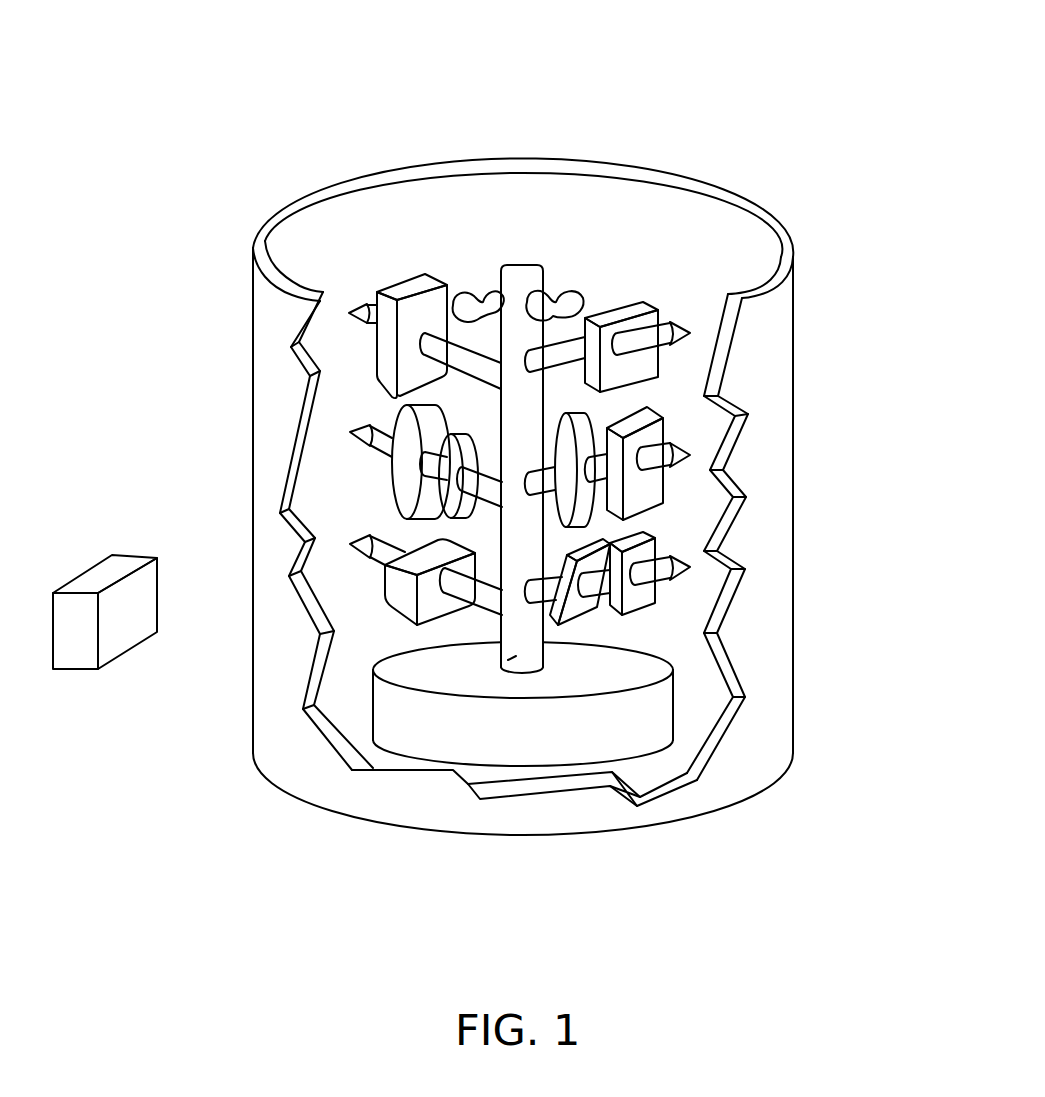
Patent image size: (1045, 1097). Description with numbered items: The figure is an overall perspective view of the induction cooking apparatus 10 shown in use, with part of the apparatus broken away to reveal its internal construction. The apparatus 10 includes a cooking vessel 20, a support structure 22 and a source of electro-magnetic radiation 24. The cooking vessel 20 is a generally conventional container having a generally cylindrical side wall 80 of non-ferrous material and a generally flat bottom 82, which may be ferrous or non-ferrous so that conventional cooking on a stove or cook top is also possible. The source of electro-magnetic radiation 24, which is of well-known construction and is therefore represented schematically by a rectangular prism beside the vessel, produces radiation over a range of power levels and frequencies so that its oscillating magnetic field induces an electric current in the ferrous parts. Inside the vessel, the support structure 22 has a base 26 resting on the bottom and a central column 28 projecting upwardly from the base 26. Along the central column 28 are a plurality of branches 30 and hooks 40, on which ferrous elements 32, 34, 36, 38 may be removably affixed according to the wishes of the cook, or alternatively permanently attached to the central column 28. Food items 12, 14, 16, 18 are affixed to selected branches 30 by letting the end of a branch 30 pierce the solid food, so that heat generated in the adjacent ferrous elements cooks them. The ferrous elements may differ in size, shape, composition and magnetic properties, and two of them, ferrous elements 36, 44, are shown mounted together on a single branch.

The induction cooking apparatus 10 is at (801, 90).
The food item 12 is at (401, 287).
The food item 14 is at (635, 307).
The food item 16 is at (653, 498).
The food item 18 is at (657, 600).
The cooking vessel 20 is at (252, 757).
The support structure 22 is at (527, 236).
The source of electro-magnetic radiation 24 is at (113, 643).
The base 26 is at (650, 711).
The central column 28 is at (517, 655).
The branch 30 is at (351, 313).
The ferrous element 32 is at (598, 422).
The ferrous element 34 is at (580, 610).
The ferrous element 36 is at (397, 467).
The ferrous element 38 is at (425, 608).
The hook 40 is at (476, 301).
The ferrous element 44 is at (443, 490).
The side wall 80 is at (793, 638).
The flat bottom 82 is at (652, 764).